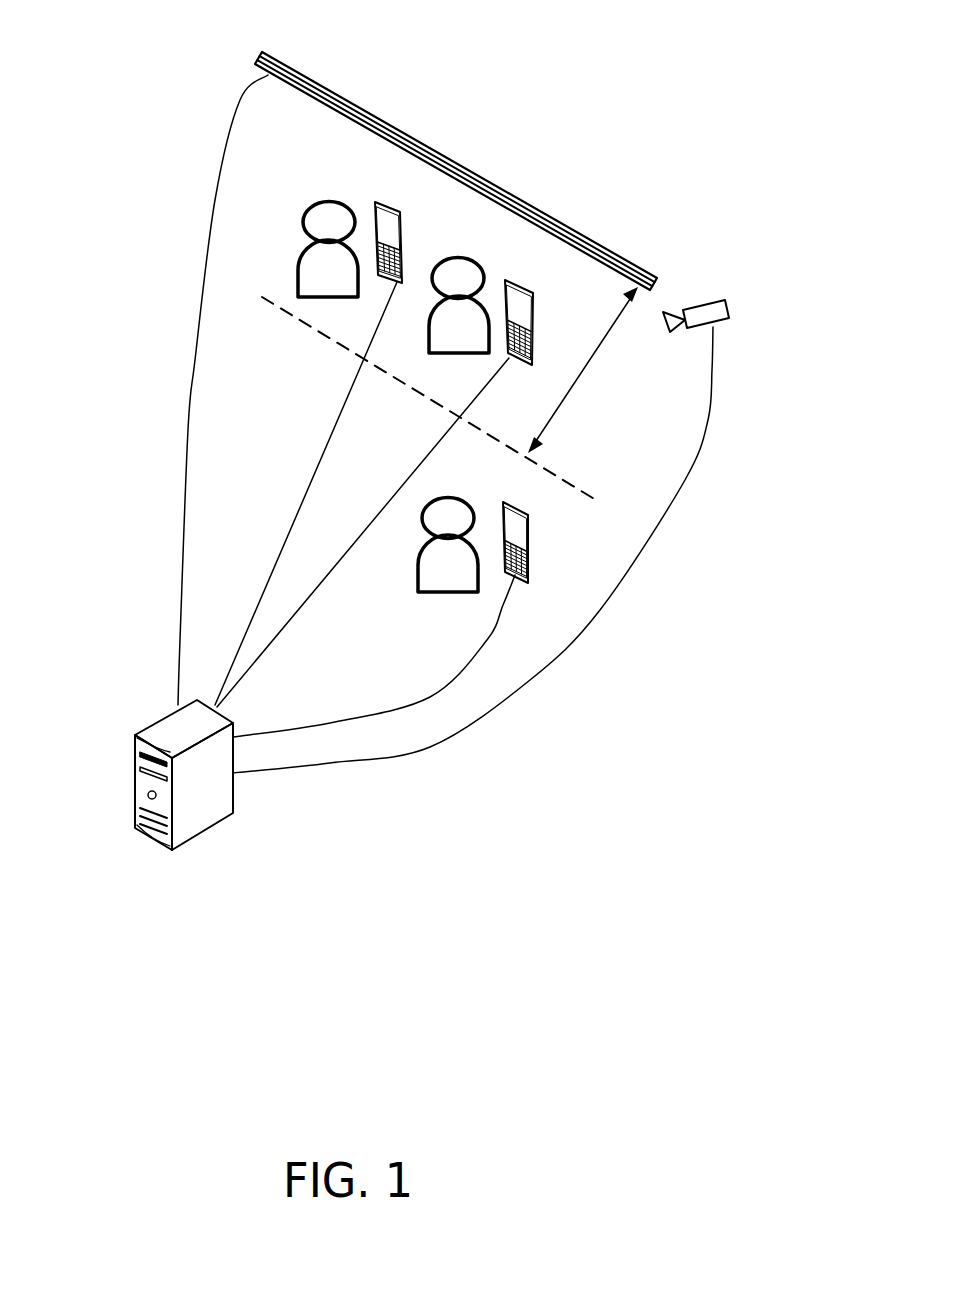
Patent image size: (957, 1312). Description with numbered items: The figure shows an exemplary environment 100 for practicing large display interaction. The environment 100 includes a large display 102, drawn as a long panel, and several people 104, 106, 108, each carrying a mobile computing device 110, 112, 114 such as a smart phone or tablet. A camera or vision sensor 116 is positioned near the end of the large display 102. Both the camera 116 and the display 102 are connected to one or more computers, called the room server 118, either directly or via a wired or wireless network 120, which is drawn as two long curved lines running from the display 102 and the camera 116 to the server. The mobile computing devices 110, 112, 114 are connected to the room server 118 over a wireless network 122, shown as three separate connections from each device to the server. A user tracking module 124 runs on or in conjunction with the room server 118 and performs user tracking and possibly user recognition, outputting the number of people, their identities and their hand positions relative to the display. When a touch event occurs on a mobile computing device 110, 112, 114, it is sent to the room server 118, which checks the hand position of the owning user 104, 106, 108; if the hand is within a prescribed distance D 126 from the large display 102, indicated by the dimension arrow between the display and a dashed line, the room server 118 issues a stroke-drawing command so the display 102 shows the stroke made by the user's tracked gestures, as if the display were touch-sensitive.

The environment 100 is at (606, 142).
The large display 102 is at (258, 63).
The person 104 is at (312, 275).
The person 106 is at (441, 331).
The person 108 is at (431, 570).
The mobile computing device 110 is at (388, 217).
The mobile computing device 112 is at (513, 295).
The mobile computing device 114 is at (513, 527).
The camera 116 is at (723, 299).
The room server 118 is at (210, 812).
The network 120 is at (188, 428).
The wireless network 122 is at (345, 405).
The user tracking module 124 is at (185, 992).
The prescribed distance D 126 is at (608, 340).